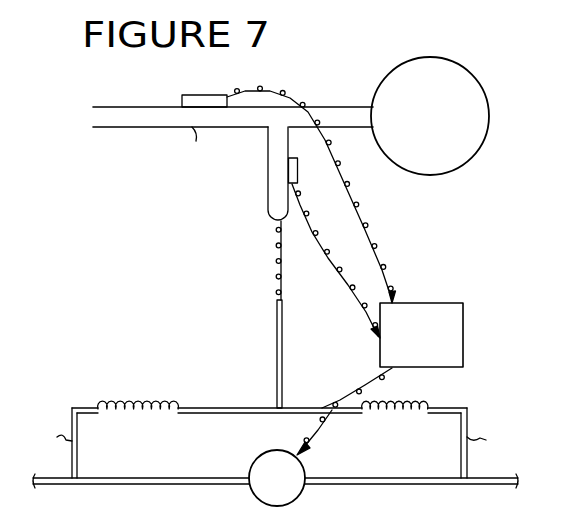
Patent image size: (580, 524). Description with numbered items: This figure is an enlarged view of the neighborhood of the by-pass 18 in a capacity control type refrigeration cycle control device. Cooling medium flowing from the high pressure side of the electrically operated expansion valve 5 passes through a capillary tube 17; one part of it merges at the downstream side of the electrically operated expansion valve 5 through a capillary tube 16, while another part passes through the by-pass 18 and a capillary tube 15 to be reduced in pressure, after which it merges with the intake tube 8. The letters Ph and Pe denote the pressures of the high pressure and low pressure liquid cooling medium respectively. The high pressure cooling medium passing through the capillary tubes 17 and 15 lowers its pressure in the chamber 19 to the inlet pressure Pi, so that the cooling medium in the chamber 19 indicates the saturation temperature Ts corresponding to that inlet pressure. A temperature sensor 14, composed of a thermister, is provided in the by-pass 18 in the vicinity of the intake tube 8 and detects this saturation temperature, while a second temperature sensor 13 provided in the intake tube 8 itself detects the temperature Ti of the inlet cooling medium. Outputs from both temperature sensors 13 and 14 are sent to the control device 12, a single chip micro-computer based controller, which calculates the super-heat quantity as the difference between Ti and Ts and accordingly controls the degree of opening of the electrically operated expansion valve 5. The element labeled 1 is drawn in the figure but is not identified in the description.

The boiler/drum 1 is at (465, 97).
The electrically operated expansion valve 5 is at (275, 465).
The intake tube 8 is at (131, 107).
The control device 12 is at (450, 330).
The temperature sensor 13 is at (207, 95).
The temperature sensor 14 is at (298, 178).
The capillary tube 15 is at (278, 268).
The capillary tube 16 is at (128, 400).
The capillary tube 17 is at (412, 400).
The by-pass 18 is at (277, 347).
The chamber 19 is at (268, 137).